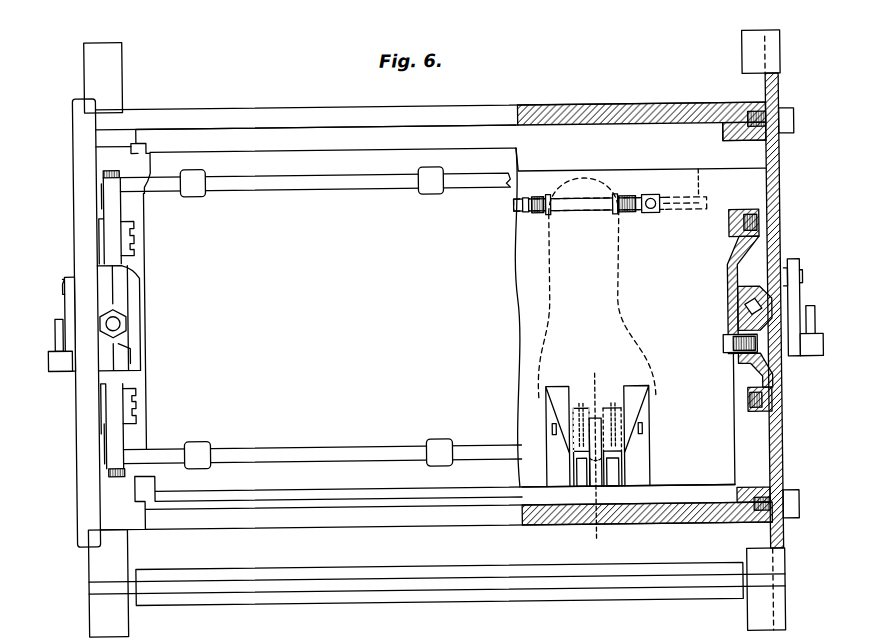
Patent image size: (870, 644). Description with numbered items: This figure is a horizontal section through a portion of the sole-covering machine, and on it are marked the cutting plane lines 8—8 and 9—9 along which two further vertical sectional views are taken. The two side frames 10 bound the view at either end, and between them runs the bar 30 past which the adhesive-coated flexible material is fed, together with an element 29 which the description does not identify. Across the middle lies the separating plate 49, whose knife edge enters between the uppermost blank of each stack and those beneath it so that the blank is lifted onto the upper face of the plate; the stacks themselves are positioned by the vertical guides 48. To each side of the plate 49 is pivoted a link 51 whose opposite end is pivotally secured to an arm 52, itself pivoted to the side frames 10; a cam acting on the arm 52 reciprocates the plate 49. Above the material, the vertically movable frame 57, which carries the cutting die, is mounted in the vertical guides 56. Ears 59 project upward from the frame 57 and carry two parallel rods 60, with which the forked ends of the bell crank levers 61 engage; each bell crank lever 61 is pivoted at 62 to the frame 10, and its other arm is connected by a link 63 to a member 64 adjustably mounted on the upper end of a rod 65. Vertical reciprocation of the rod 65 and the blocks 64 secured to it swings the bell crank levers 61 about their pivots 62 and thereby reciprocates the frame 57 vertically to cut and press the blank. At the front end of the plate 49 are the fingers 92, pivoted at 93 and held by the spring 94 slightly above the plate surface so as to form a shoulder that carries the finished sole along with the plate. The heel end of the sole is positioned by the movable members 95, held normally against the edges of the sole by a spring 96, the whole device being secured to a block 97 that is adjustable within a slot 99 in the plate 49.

The cutting plane line 8 is at (585, 240).
The cutting plane line 9 is at (586, 452).
The side frames 10 is at (782, 92).
The bottom rail 29 is at (241, 513).
The bar 30 is at (338, 568).
The vertical guides 48 is at (551, 432).
The separating plate 49 is at (695, 310).
The link 51 is at (75, 277).
The arm 52 is at (57, 320).
The vertical guides 56 is at (207, 118).
The vertically movable frame 57 is at (275, 163).
The ears 59 is at (200, 192).
The parallel rods 60 is at (305, 183).
The bell crank lever 61 is at (110, 207).
The pivot 62 is at (132, 253).
The link 63 is at (138, 287).
The member 64 is at (118, 345).
The rod 65 is at (122, 322).
The fingers 92 is at (574, 462).
The pivot 93 is at (572, 470).
The spring 94 is at (600, 420).
The movable members 95 is at (616, 196).
The spring 96 is at (630, 198).
The block 97 is at (527, 199).
The slot 99 is at (678, 200).